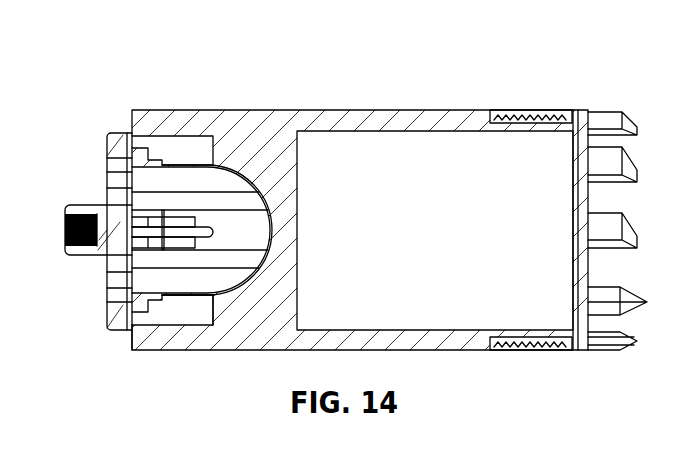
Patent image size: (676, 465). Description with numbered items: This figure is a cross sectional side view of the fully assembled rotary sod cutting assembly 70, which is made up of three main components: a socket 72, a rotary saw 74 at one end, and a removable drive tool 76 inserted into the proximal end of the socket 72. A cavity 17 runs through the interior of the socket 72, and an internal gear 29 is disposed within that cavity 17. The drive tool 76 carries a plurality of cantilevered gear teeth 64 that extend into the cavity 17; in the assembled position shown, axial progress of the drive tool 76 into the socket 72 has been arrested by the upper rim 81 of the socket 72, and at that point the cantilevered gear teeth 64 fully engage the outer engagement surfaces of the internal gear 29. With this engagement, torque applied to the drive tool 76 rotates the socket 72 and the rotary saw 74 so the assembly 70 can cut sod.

The rotary sod cutting assembly 70 is at (240, 46).
The socket 72 is at (327, 110).
The cavity 17 is at (453, 160).
The rotary saw 74 is at (567, 112).
The removable drive tool 76 is at (117, 133).
The cantilevered gear teeth 64 is at (142, 287).
The upper rim 81 is at (130, 337).
The internal gear 29 is at (176, 312).